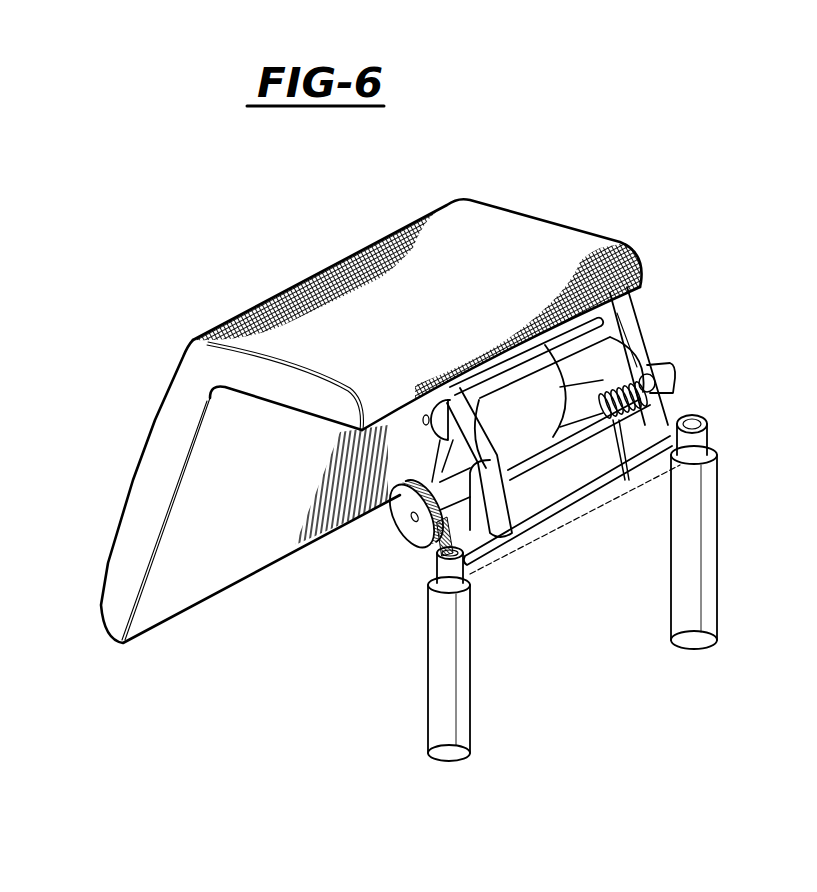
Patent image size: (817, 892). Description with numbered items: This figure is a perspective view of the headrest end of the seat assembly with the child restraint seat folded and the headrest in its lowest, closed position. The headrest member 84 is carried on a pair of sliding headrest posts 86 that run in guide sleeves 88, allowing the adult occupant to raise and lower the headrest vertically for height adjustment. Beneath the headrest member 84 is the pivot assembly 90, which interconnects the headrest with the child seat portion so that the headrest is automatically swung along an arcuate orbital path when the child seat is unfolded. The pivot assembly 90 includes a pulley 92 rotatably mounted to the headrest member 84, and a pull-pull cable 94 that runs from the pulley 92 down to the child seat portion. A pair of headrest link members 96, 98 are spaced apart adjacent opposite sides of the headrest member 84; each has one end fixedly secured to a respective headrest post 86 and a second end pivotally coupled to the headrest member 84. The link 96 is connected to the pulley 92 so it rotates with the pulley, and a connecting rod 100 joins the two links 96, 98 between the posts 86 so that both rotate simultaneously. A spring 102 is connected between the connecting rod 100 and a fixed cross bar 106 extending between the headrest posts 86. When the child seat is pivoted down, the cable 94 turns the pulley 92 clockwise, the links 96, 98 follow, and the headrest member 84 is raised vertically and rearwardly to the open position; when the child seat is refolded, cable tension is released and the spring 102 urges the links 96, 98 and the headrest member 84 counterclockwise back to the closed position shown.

The headrest member 84 is at (245, 303).
The headrest posts 86 is at (470, 578).
The guide sleeves 88 is at (462, 683).
The pivot assembly 90 is at (647, 318).
The pulley 92 is at (402, 512).
The pull-pull cable 94 is at (440, 548).
The headrest link member 96 is at (460, 398).
The headrest link member 98 is at (627, 342).
The connecting rod 100 is at (533, 347).
The spring 102 is at (650, 410).
The cross bar 106 is at (583, 497).